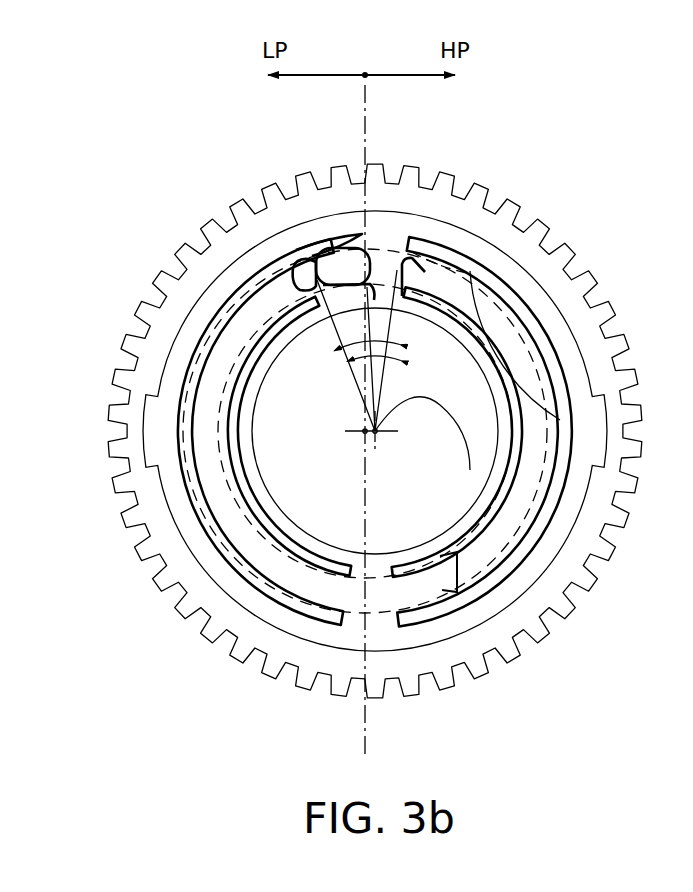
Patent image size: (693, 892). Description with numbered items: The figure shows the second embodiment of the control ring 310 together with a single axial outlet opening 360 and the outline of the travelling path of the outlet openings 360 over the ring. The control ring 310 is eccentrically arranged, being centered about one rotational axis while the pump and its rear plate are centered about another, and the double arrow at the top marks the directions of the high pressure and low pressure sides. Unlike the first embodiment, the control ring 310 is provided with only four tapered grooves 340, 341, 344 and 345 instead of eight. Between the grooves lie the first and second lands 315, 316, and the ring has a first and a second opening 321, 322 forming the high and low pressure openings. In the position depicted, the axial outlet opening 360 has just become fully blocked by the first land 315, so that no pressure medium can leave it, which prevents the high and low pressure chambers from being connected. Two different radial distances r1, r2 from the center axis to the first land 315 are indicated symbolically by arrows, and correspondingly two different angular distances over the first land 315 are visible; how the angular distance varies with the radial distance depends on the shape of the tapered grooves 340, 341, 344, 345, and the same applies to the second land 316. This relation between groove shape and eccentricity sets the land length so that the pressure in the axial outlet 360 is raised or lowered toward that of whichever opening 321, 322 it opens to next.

The control ring 310 is at (196, 130).
The first land 315 is at (408, 292).
The second land 316 is at (375, 580).
The first opening 321 is at (247, 318).
The second opening 322 is at (465, 280).
The tapered groove 340 is at (445, 268).
The tapered groove 341 is at (362, 238).
The tapered groove 344 is at (420, 592).
The tapered groove 345 is at (362, 572).
The axial outlet opening 360 is at (371, 268).
The radial distance r1 is at (322, 330).
The radial distance r2 is at (247, 317).